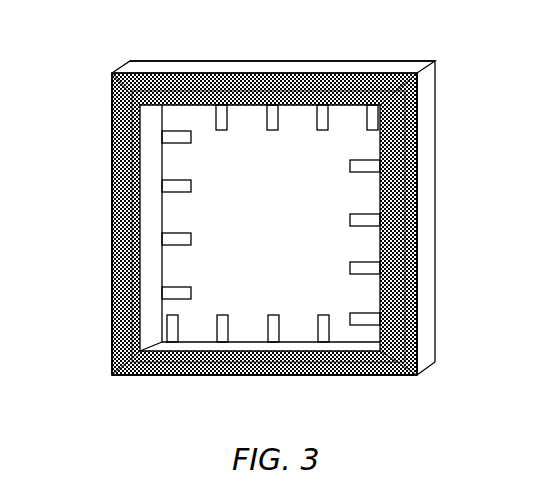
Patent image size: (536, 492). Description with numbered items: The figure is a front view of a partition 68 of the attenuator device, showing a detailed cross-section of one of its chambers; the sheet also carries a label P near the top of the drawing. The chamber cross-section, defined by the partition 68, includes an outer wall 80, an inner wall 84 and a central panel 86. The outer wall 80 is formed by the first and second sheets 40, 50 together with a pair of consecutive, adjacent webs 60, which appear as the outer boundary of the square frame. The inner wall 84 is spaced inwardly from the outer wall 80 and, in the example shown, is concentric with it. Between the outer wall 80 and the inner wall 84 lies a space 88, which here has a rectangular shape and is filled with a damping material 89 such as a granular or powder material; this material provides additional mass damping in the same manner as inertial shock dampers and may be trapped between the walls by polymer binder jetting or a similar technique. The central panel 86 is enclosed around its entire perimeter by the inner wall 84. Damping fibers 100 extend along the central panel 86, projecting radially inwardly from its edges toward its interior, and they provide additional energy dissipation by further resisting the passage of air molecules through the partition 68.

The outer wall 80 is at (446, 94).
The package P is at (270, 57).
The first sheet 40 is at (197, 63).
The inner wall 84 is at (355, 92).
The web 60 is at (422, 168).
The partition 68 is at (76, 143).
The space 88 is at (382, 82).
The damping material 89 is at (348, 362).
The second sheet 50 is at (263, 368).
The central panel 86 is at (278, 220).
The damping fibers 100 is at (191, 239).